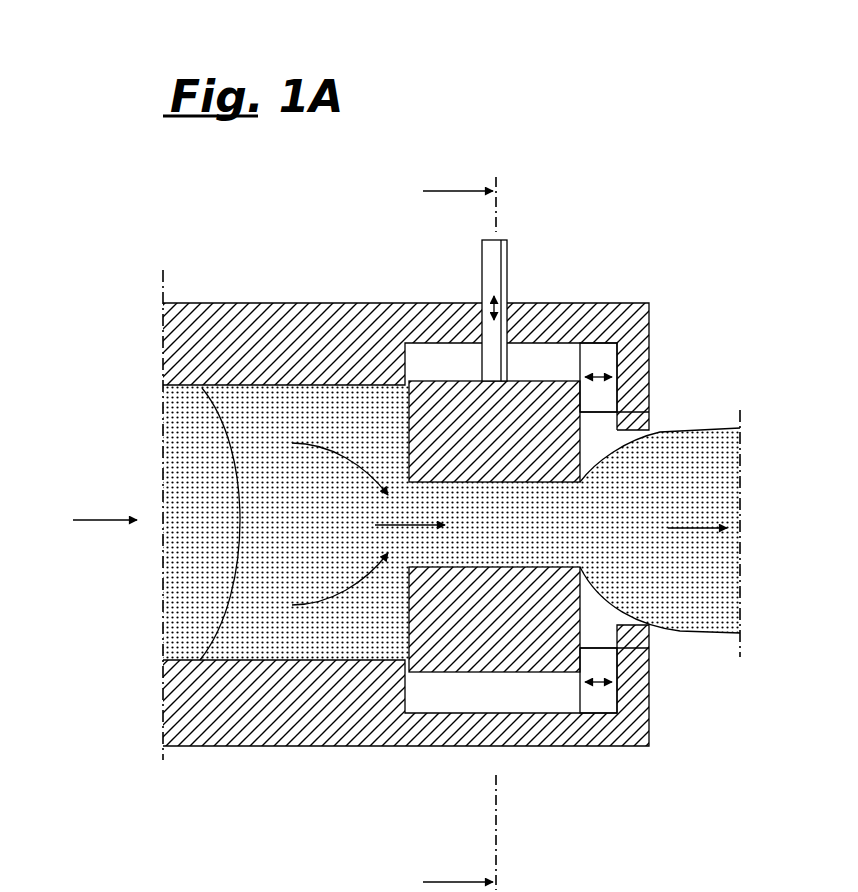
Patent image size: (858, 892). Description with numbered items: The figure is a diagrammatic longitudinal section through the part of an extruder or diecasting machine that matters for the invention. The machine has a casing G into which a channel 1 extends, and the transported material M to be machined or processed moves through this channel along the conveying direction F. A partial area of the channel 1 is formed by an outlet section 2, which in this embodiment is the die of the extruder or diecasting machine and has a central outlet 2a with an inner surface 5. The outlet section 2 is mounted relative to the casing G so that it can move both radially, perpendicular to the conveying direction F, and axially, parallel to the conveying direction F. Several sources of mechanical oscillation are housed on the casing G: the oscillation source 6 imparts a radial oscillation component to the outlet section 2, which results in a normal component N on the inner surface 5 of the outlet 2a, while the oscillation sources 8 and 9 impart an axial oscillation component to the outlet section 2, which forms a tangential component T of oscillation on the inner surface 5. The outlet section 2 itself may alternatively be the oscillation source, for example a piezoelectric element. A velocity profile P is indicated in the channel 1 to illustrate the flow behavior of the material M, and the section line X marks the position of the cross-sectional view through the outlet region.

The channel 1 is at (200, 560).
The outlet section 2 is at (443, 673).
The central outlet 2a is at (523, 563).
The inner surface 5 is at (543, 485).
The oscillation source 6 is at (493, 270).
The oscillation source 8 is at (610, 653).
The oscillation source 9 is at (614, 406).
The transported material M is at (266, 407).
The casing G is at (345, 347).
The normal component N is at (497, 303).
The tangential component T is at (592, 387).
The velocity profile P is at (217, 623).
The conveying direction F is at (105, 501).
The section line X is at (459, 523).